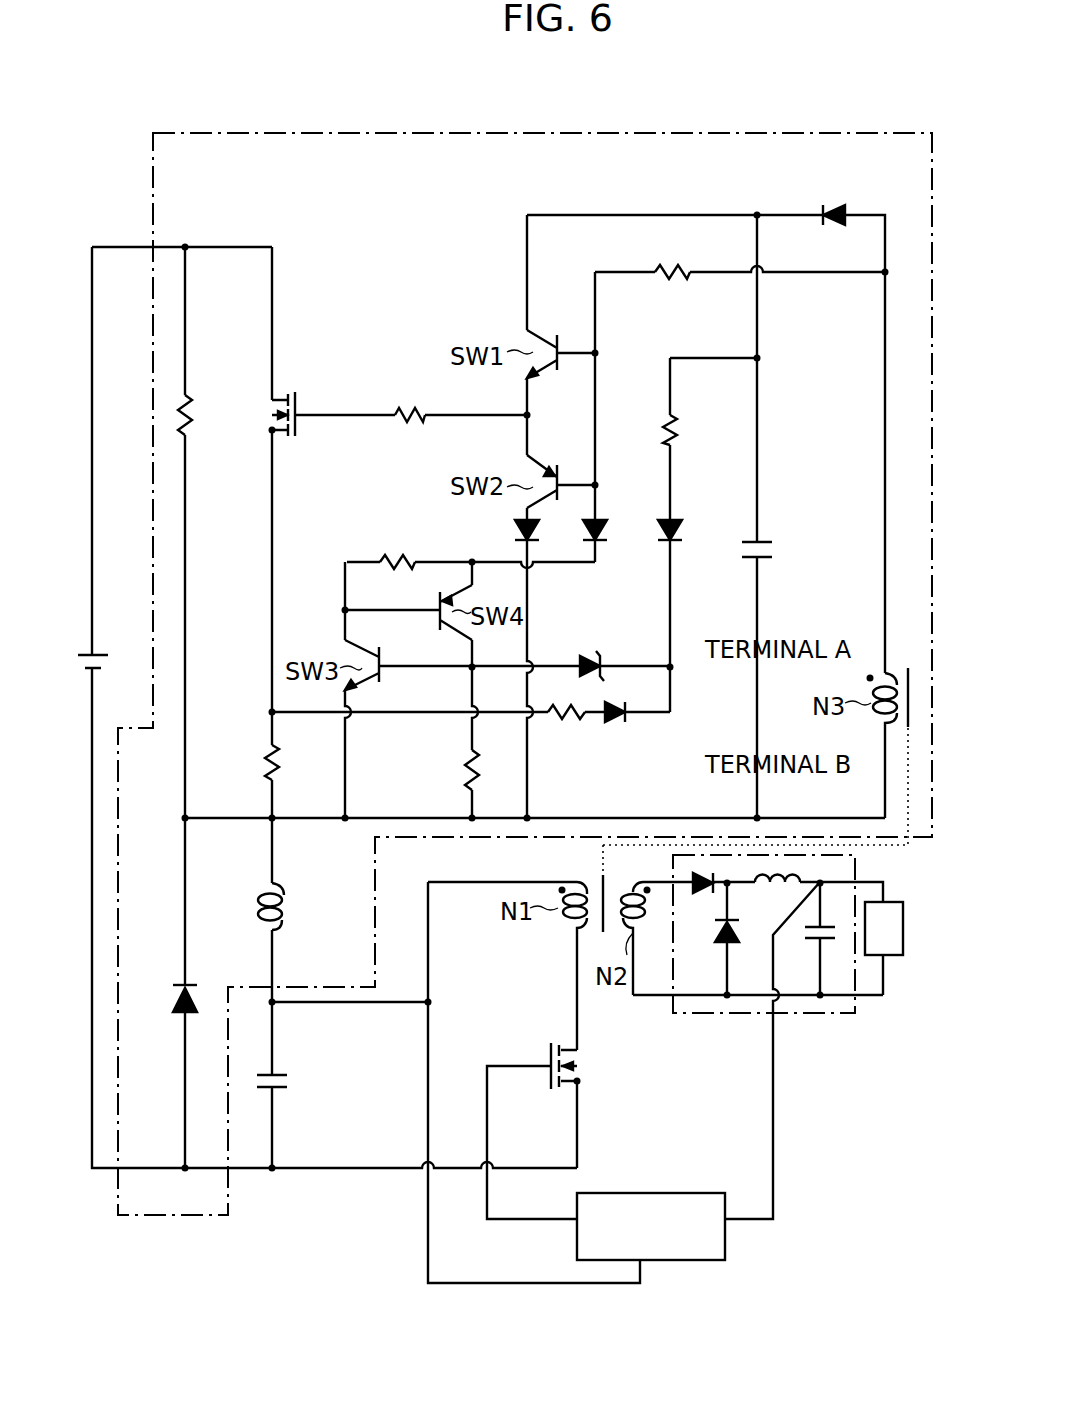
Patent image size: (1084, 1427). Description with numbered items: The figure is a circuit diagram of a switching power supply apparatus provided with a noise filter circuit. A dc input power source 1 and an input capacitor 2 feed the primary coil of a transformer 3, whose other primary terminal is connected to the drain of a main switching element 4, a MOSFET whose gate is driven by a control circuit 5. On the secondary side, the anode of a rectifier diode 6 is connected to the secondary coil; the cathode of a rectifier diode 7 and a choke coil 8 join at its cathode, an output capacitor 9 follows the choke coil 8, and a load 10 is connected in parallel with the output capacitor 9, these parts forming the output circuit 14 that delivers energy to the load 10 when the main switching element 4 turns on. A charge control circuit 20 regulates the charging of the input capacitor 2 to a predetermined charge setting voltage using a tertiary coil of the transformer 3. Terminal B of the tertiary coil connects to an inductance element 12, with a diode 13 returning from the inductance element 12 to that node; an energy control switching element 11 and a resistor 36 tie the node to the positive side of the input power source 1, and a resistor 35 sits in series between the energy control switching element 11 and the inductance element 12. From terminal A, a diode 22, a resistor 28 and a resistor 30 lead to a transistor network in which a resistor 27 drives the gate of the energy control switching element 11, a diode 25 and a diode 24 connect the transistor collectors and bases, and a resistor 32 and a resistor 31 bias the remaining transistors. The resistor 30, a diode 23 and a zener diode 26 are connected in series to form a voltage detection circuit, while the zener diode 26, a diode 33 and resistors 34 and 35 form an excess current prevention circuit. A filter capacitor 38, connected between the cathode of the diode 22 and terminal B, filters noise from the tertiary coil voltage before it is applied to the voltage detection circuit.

The dc input power source 1 is at (96, 652).
The input capacitor 2 is at (295, 1082).
The transformer 3 is at (590, 878).
The main switching element 4 is at (580, 1062).
The control circuit 5 is at (642, 1192).
The rectifier diode 6 is at (690, 878).
The rectifier diode 7 is at (724, 935).
The choke coil 8 is at (762, 890).
The output capacitor 9 is at (822, 945).
The load 10 is at (887, 900).
The energy control switching element 11 is at (298, 393).
The inductance element 12 is at (292, 905).
The diode 13 is at (183, 984).
The output circuit 14 is at (815, 1016).
The charge control circuit 20 is at (525, 133).
The diode 22 is at (835, 210).
The diode 23 is at (678, 518).
The diode 24 is at (603, 518).
The diode 25 is at (532, 538).
The zener diode 26 is at (588, 650).
The resistor 27 is at (410, 432).
The resistor 28 is at (672, 292).
The resistor 30 is at (682, 427).
The resistor 31 is at (468, 765).
The resistor 32 is at (395, 550).
The diode 33 is at (628, 720).
The resistor 34 is at (562, 727).
The resistor 35 is at (265, 767).
The resistor 36 is at (197, 410).
The filter capacitor 38 is at (765, 540).